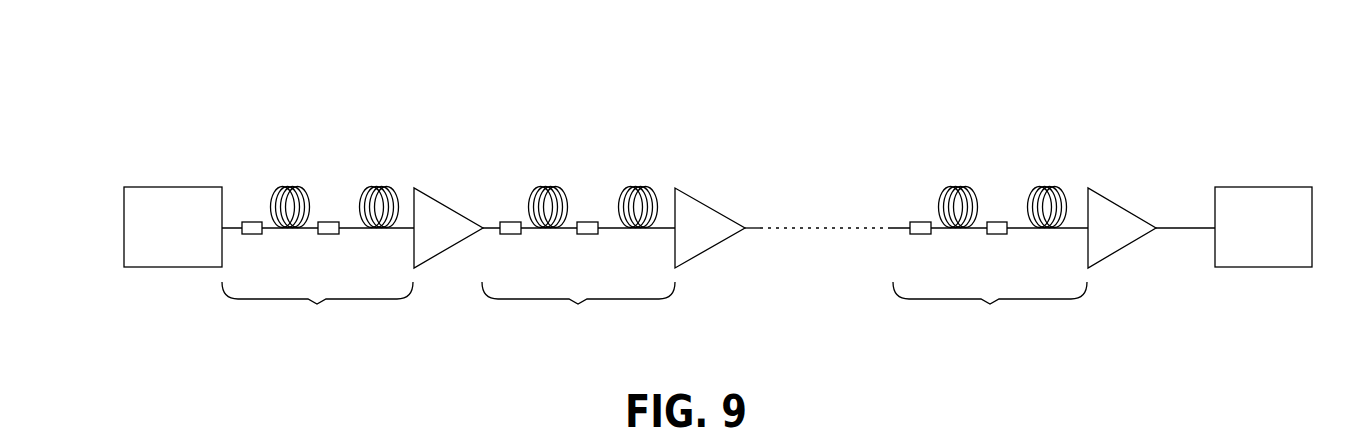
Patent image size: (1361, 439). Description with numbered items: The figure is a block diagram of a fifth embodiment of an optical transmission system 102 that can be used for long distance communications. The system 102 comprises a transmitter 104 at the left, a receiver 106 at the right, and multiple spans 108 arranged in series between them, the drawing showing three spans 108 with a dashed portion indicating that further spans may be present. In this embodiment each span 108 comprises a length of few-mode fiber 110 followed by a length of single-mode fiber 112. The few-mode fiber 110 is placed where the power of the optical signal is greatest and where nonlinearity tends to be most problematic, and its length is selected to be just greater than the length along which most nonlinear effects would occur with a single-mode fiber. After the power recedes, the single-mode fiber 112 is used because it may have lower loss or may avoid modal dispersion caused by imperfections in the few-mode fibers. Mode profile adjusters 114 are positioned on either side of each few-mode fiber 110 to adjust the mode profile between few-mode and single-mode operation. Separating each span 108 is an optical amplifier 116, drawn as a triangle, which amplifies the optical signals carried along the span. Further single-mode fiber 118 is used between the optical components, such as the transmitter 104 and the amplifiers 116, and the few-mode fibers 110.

The optical transmission system 102 is at (1310, 109).
The transmitter 104 is at (156, 236).
The receiver 106 is at (1246, 236).
The span 108 is at (654, 308).
The few-mode fiber 110 is at (290, 186).
The single-mode fiber 112 is at (380, 186).
The mode profile adjuster 114 is at (252, 222).
The optical amplifier 116 is at (420, 237).
The single-mode fiber 118 is at (234, 227).